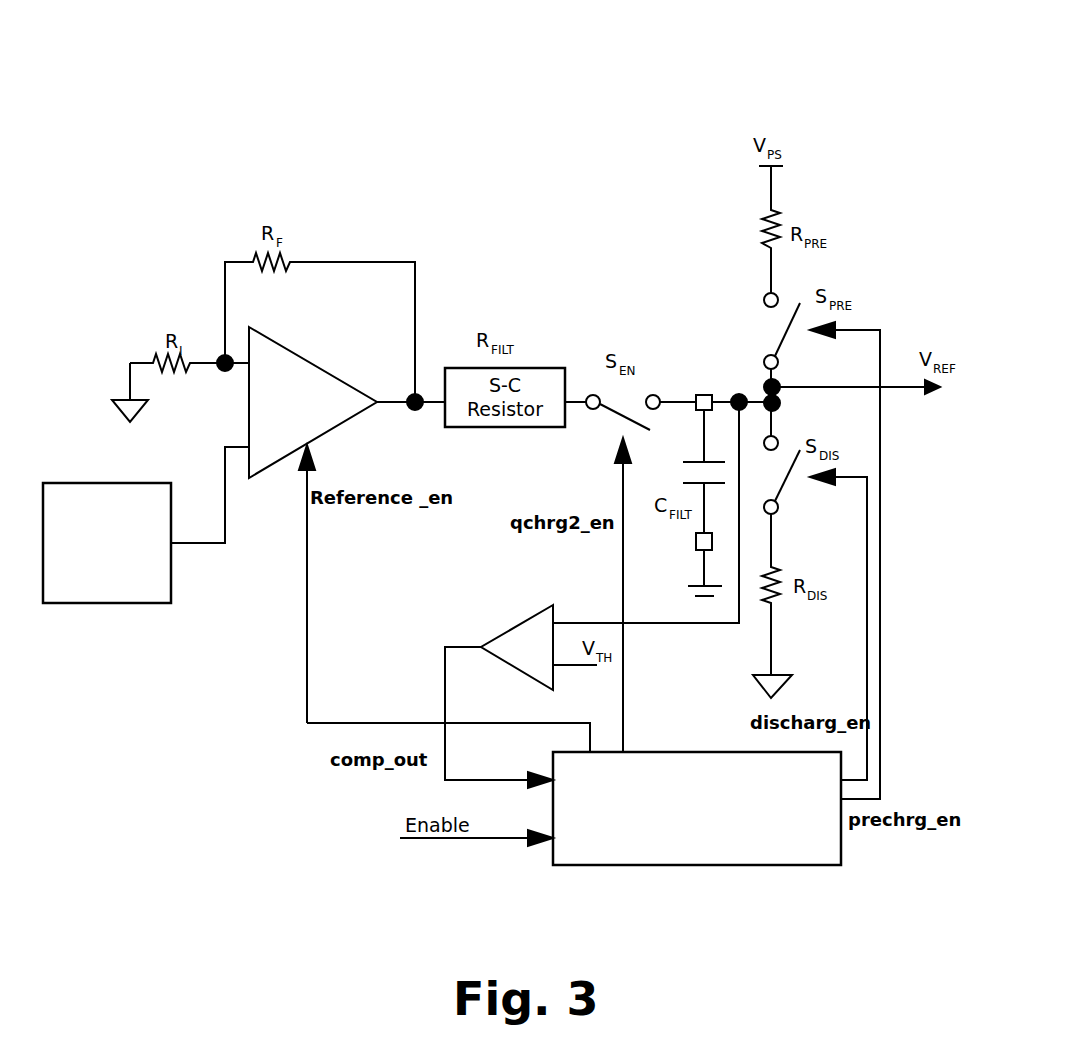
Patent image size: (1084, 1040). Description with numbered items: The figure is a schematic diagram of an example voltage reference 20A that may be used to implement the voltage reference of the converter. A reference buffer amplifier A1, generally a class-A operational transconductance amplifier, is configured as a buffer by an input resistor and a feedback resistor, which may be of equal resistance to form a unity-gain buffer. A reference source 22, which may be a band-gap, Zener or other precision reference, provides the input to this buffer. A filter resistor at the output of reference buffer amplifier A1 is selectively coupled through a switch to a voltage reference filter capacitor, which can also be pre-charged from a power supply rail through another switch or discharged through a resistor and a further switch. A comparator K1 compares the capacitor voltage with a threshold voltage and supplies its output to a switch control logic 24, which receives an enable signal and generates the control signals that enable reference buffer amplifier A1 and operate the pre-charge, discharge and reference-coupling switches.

The voltage reference 20A is at (588, 88).
The reference source 22 is at (96, 580).
The switch control logic 24 is at (686, 833).
The reference buffer amplifier A1 is at (284, 414).
The comparator K1 is at (512, 659).